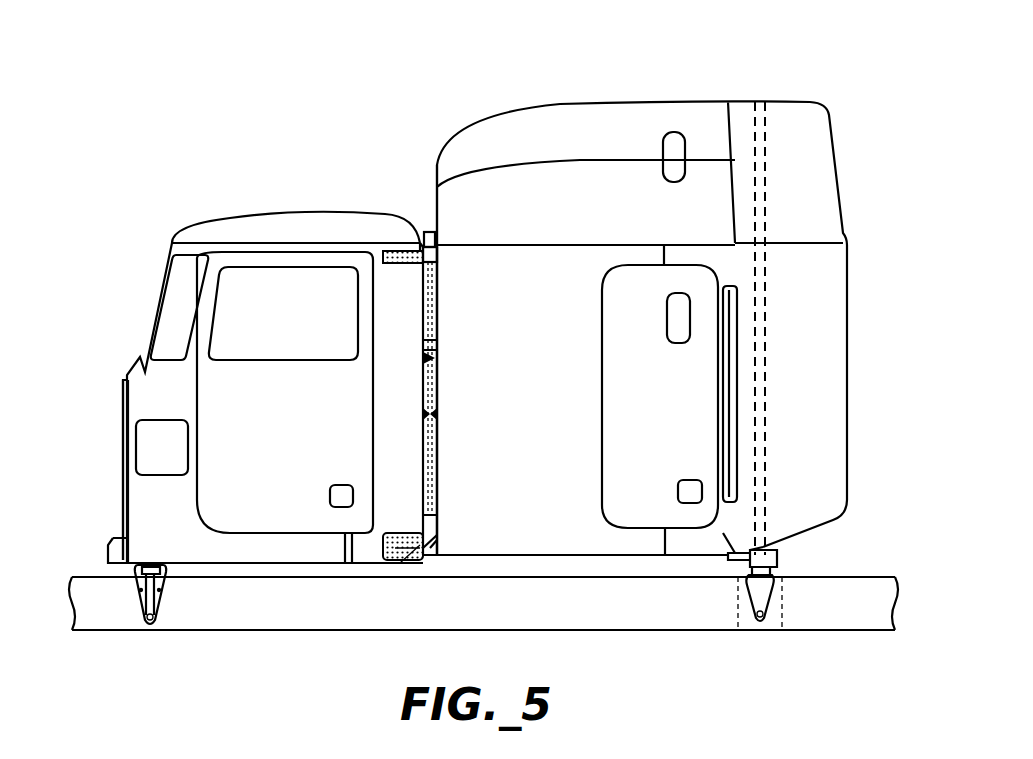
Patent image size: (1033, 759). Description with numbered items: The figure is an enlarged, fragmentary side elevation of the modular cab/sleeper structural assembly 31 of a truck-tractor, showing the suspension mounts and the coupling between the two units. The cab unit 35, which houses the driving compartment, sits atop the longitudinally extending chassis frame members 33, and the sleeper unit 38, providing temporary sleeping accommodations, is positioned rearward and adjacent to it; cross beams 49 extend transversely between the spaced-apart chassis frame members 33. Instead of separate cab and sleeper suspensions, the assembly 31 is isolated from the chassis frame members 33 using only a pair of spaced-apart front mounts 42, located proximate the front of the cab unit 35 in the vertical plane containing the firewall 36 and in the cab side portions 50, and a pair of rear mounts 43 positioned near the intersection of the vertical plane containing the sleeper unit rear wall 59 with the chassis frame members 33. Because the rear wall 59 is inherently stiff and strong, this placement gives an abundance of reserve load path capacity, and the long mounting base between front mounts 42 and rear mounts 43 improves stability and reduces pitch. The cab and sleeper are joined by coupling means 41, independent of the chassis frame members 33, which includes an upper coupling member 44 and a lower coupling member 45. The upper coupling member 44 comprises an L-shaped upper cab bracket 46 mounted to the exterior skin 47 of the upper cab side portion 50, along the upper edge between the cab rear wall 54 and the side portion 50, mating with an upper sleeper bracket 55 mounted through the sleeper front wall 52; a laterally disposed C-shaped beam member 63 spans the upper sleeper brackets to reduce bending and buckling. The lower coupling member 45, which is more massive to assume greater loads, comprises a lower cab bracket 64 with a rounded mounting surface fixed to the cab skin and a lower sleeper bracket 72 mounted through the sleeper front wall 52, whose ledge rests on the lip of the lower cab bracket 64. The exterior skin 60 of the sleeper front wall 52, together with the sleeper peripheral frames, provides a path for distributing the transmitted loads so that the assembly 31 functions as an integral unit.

The modular cab/sleeper structural assembly 31 is at (497, 82).
The chassis frame members 33 is at (605, 627).
The cab unit 35 is at (240, 218).
The firewall 36 is at (122, 437).
The sleeper unit 38 is at (690, 102).
The coupling means 41 is at (413, 203).
The front mounts 42 is at (160, 604).
The rear mounts 43 is at (764, 600).
The upper coupling member 44 is at (410, 268).
The lower coupling member 45 is at (405, 528).
The upper cab bracket 46 is at (420, 245).
The exterior skin 47 is at (398, 286).
The cross beams 49 is at (742, 590).
The cab side portions 50 is at (158, 504).
The sleeper front wall 52 is at (425, 358).
The cab rear wall 54 is at (435, 413).
The upper sleeper bracket 55 is at (437, 258).
The sleeper unit rear wall 59 is at (765, 423).
The exterior skin 60 is at (423, 344).
The beam member 63 is at (426, 230).
The lower cab bracket 64 is at (407, 565).
The lower sleeper bracket 72 is at (432, 528).